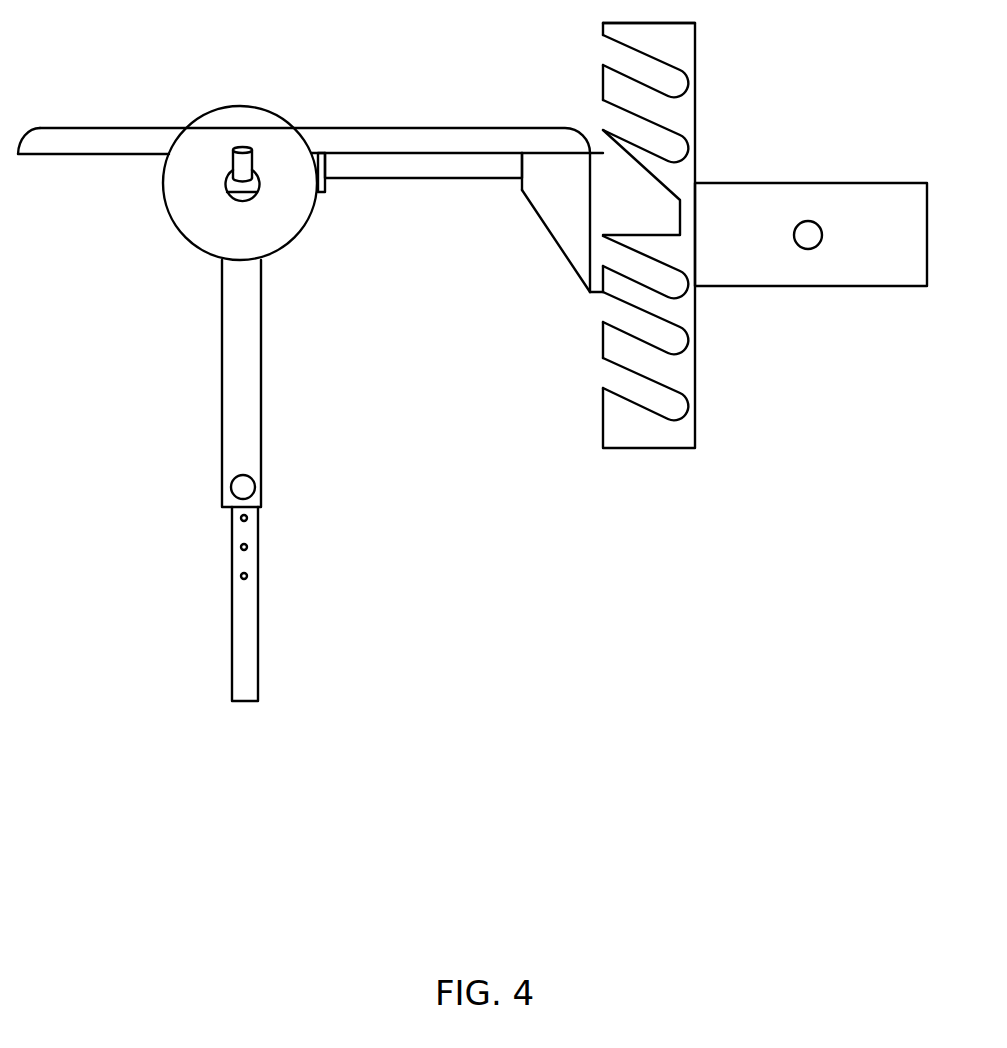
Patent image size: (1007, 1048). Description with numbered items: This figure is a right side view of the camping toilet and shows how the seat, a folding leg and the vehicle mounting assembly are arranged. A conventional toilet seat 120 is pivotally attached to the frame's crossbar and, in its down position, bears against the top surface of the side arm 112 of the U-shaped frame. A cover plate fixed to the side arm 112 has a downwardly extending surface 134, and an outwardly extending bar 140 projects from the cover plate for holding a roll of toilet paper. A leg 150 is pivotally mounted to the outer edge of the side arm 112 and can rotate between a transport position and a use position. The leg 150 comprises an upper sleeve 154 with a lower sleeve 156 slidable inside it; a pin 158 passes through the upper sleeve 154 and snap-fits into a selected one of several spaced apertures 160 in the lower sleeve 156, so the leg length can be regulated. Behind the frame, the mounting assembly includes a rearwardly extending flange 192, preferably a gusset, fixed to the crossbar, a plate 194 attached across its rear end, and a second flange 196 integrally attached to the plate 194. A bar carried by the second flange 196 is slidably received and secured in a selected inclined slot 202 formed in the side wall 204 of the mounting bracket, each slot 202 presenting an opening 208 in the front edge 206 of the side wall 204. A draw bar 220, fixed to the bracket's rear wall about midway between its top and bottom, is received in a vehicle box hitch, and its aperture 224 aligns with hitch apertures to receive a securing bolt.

The side arm 112 is at (418, 175).
The toilet seat 120 is at (100, 133).
The downwardly extending surface 134 is at (252, 190).
The outwardly extending bar 140 is at (233, 153).
The leg 150 is at (186, 463).
The upper sleeve 154 is at (258, 387).
The lower sleeve 156 is at (251, 650).
The pin 158 is at (252, 483).
The aperture 160 is at (247, 547).
The flange 192 is at (565, 250).
The plate 194 is at (590, 292).
The flange 196 is at (673, 207).
The inclined slot 202 is at (670, 410).
The side wall 204 is at (688, 33).
The front edge 206 is at (603, 80).
The opening 208 is at (612, 373).
The draw bar 220 is at (857, 190).
The aperture 224 is at (812, 238).